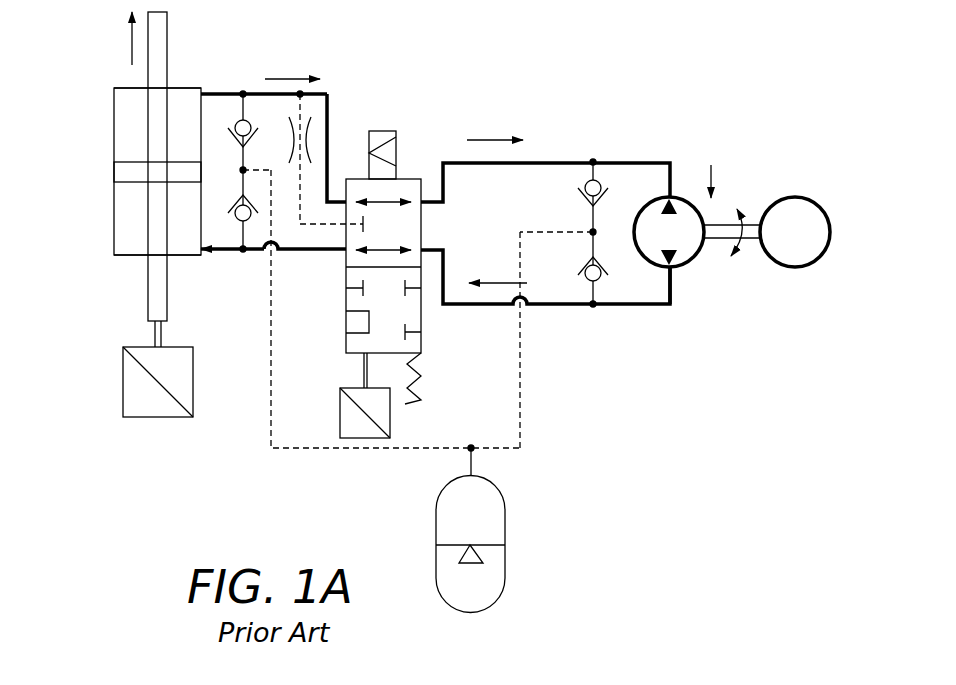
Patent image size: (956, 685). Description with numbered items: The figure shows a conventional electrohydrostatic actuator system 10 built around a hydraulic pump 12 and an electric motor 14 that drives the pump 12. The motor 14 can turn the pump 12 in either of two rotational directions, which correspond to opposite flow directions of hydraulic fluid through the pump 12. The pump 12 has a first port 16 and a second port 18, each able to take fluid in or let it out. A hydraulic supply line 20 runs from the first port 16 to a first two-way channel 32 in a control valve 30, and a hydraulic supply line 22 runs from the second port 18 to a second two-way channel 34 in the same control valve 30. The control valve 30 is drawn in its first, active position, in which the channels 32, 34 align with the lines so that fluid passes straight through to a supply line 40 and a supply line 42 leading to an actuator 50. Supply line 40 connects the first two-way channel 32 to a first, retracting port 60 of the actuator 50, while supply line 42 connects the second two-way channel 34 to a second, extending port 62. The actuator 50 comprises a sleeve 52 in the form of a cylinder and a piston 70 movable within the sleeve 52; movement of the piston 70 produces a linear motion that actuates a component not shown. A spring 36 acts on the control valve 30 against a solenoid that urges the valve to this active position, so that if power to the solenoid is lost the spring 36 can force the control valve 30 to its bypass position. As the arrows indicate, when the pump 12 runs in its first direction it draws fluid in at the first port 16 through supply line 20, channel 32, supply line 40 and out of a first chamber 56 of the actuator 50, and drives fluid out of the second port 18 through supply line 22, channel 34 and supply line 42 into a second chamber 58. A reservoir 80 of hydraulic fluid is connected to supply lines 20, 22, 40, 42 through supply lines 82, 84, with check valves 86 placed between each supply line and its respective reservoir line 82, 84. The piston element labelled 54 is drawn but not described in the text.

The electrohydrostatic actuator system 10 is at (516, 81).
The hydraulic pump 12 is at (648, 208).
The motor 14 is at (797, 268).
The first port 16 is at (681, 204).
The second port 18 is at (672, 268).
The hydraulic supply line 20 is at (561, 162).
The hydraulic supply line 22 is at (565, 305).
The control valve 30 is at (407, 281).
The first two-way channel 32 is at (380, 200).
The second two-way channel 34 is at (380, 252).
The spring 36 is at (415, 397).
The supply line 40 is at (329, 96).
The supply line 42 is at (315, 252).
The actuator 50 is at (124, 171).
The sleeve 52 is at (114, 228).
The piston 54 is at (114, 172).
The first chamber 56 is at (114, 101).
The second chamber 58 is at (130, 256).
The retracting port 60 is at (205, 93).
The extending port 62 is at (205, 252).
The piston 70 is at (167, 25).
The reservoir 80 is at (506, 515).
The supply line 82 is at (522, 432).
The supply line 84 is at (300, 449).
The check valve 86 is at (253, 137).